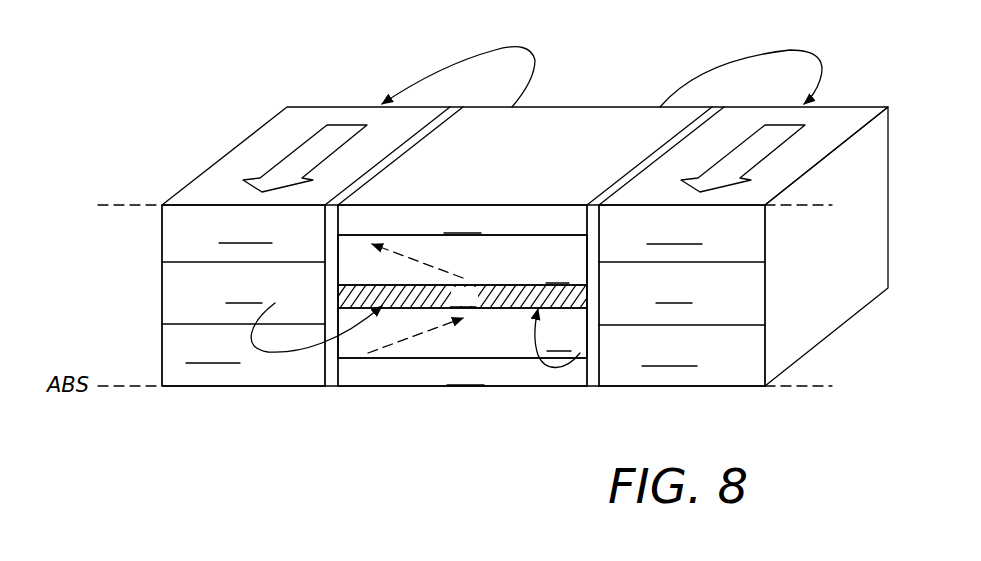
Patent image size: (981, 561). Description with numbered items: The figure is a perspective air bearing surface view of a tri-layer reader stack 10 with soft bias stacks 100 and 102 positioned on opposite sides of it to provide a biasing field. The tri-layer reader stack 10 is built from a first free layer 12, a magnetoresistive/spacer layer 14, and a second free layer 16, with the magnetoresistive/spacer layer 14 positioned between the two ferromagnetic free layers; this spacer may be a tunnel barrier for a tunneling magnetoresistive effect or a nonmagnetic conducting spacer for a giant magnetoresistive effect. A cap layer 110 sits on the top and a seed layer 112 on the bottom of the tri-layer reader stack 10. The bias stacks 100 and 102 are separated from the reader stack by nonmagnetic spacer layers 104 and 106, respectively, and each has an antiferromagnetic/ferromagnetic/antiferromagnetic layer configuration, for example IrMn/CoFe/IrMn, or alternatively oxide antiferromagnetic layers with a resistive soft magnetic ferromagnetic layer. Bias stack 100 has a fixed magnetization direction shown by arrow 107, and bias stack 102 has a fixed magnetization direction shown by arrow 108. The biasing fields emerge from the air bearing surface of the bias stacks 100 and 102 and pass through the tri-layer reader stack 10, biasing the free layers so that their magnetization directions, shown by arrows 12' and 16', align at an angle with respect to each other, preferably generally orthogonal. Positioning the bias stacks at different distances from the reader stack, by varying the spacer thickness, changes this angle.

The tri-layer reader stack 10 is at (428, 259).
The first free layer 12 is at (462, 260).
The biased magnetization direction of first free layer 12' is at (439, 261).
The magnetoresistive/spacer layer 14 is at (463, 297).
The second free layer 16 is at (462, 338).
The biased magnetization direction of second free layer 16' is at (437, 335).
The soft bias stack 100 is at (324, 106).
The soft bias stack 102 is at (852, 103).
The nonmagnetic spacer layer 104 is at (332, 383).
The nonmagnetic spacer layer 106 is at (593, 384).
The fixed magnetization direction of bias stack 100 107 is at (327, 153).
The fixed magnetization direction of bias stack 102 108 is at (777, 152).
The cap layer 110 is at (462, 222).
The seed layer 112 is at (462, 372).